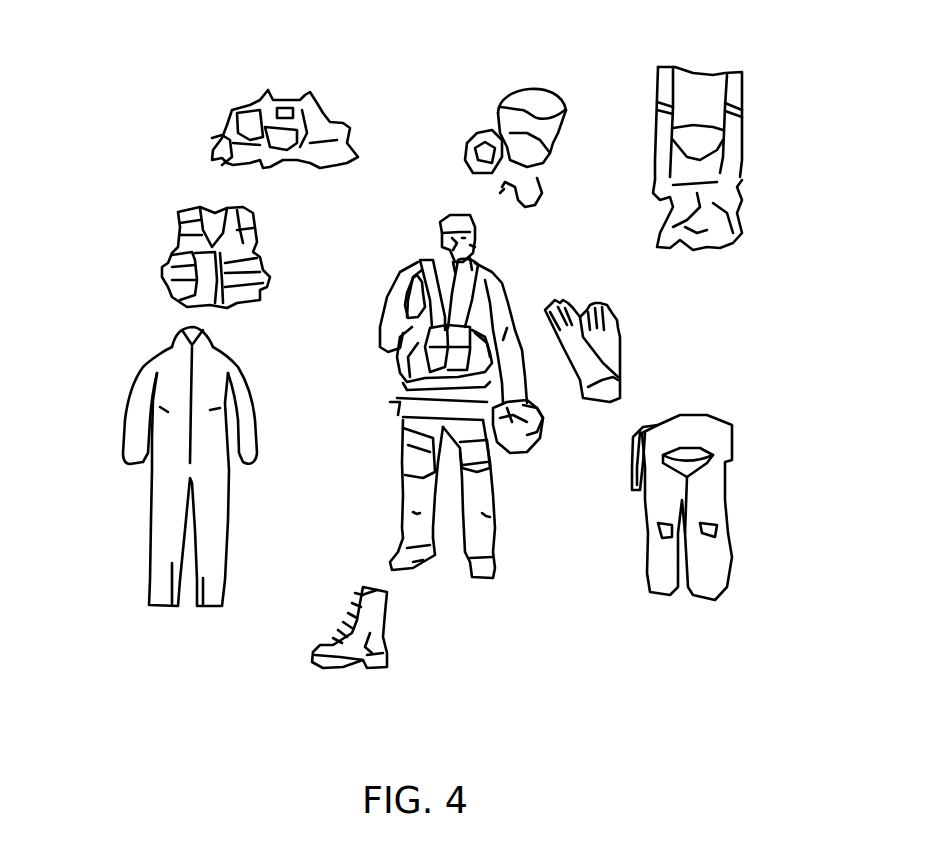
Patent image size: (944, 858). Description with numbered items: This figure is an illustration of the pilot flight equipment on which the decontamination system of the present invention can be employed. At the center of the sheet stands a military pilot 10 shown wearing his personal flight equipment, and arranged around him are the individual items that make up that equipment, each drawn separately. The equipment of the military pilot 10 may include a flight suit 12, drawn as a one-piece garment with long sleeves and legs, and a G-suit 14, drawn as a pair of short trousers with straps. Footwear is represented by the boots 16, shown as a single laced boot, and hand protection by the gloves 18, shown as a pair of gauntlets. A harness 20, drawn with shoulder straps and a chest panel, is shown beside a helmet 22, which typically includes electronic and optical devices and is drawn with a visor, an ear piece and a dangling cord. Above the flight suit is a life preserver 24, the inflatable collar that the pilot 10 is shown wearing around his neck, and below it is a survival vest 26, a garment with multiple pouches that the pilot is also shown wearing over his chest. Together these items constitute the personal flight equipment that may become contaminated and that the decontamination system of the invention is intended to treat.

The military pilot 10 is at (495, 512).
The flight suit 12 is at (229, 510).
The G-suit 14 is at (733, 560).
The boots 16 is at (387, 638).
The gloves 18 is at (618, 357).
The harness 20 is at (655, 87).
The helmet 22 is at (530, 83).
The life preserver 24 is at (253, 107).
The survival vest 26 is at (172, 258).